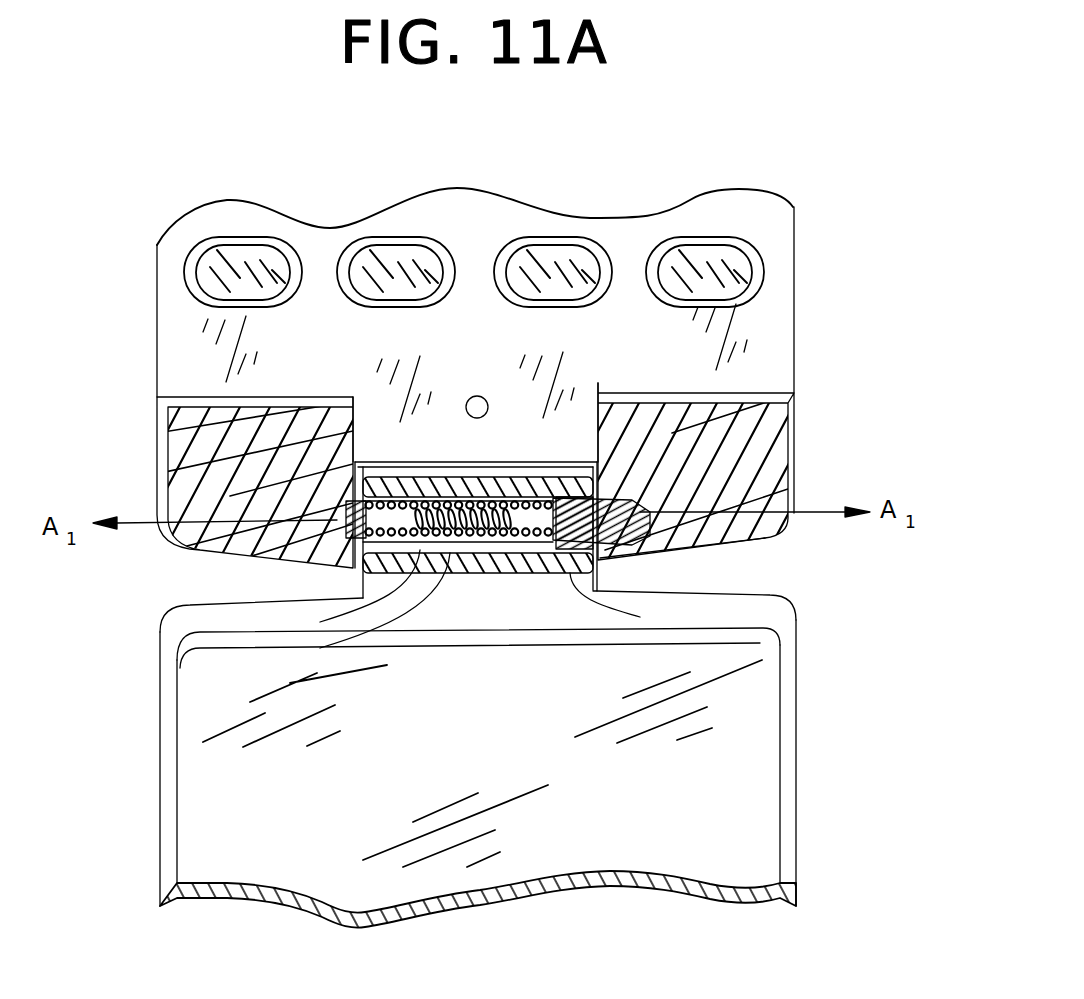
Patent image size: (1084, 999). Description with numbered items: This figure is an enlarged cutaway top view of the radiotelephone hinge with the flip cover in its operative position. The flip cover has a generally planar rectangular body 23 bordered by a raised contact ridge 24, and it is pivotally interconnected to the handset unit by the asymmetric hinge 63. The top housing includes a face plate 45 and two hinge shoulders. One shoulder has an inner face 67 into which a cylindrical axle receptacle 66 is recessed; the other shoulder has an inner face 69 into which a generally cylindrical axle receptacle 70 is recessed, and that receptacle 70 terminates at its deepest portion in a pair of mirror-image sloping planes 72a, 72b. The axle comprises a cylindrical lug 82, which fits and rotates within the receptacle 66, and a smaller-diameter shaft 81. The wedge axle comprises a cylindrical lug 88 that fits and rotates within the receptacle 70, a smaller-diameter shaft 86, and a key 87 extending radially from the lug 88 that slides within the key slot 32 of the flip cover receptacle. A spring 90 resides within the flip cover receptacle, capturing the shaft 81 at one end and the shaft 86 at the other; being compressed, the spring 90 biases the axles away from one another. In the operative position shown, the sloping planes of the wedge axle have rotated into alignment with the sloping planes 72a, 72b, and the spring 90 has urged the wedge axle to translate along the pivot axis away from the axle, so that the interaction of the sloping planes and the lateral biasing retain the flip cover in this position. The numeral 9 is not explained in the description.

The face plate 45 is at (777, 238).
The shaft 81 is at (355, 473).
The cylindrical lug 82 is at (350, 500).
The axle receptacle 66 is at (320, 507).
The inner face 67 is at (363, 583).
The key slot 32 is at (320, 622).
The spring 90 is at (320, 648).
The shaft 86 is at (548, 477).
The cylindrical lug 88 is at (640, 497).
The sloping plane 72a is at (598, 496).
The sloping plane 72b is at (750, 545).
The asymmetric hinge 63 is at (683, 501).
The axle receptacle 70 is at (597, 548).
The inner face 69 is at (593, 590).
The key 87 is at (640, 617).
The raised contact ridge 24 is at (790, 757).
The body 23 is at (752, 828).
The cavity 9 is at (478, 628).